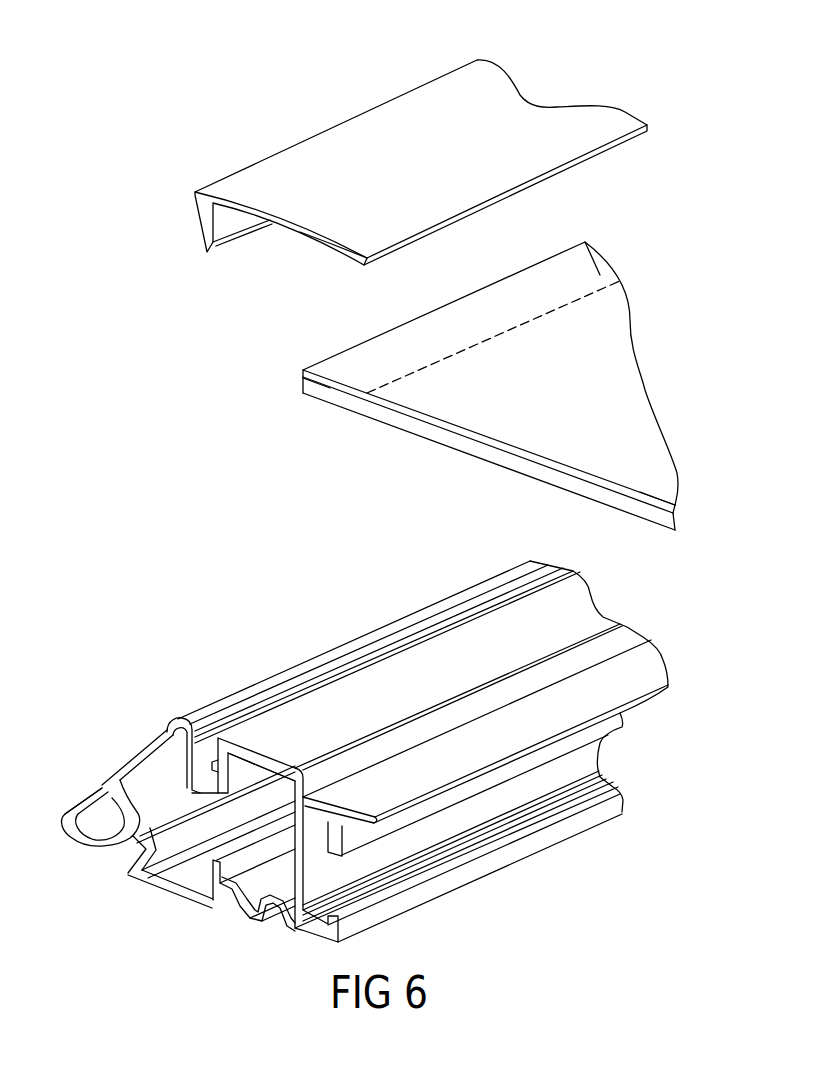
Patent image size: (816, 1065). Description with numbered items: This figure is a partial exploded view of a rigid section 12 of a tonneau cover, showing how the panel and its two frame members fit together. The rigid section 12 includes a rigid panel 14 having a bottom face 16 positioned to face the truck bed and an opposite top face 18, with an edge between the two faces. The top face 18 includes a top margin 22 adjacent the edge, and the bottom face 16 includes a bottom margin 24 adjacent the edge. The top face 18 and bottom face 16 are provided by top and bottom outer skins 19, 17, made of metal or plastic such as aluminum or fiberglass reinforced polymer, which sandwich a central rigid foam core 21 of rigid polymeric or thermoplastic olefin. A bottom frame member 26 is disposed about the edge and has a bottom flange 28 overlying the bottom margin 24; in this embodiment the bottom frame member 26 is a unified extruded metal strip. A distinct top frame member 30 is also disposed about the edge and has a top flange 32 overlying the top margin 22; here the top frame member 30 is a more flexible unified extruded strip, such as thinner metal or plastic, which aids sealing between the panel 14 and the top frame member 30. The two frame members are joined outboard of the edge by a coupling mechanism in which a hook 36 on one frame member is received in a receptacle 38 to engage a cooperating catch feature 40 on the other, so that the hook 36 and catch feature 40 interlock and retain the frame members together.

The rigid section 12 is at (210, 78).
The rigid panel 14 is at (503, 397).
The bottom face 16 is at (452, 449).
The bottom outer sheet layer 17 is at (677, 530).
The top face 18 is at (580, 381).
The top outer sheet layer 19 is at (678, 505).
The central rigid foam core 21 is at (674, 515).
The top margin 22 is at (587, 268).
The bottom margin 24 is at (330, 404).
The bottom frame member 26 is at (364, 751).
The bottom flange 28 is at (348, 813).
The top frame member 30 is at (421, 169).
The top flange 32 is at (339, 246).
The hook 36 is at (237, 238).
The receptacle 38 is at (204, 742).
The catch feature 40 is at (203, 773).